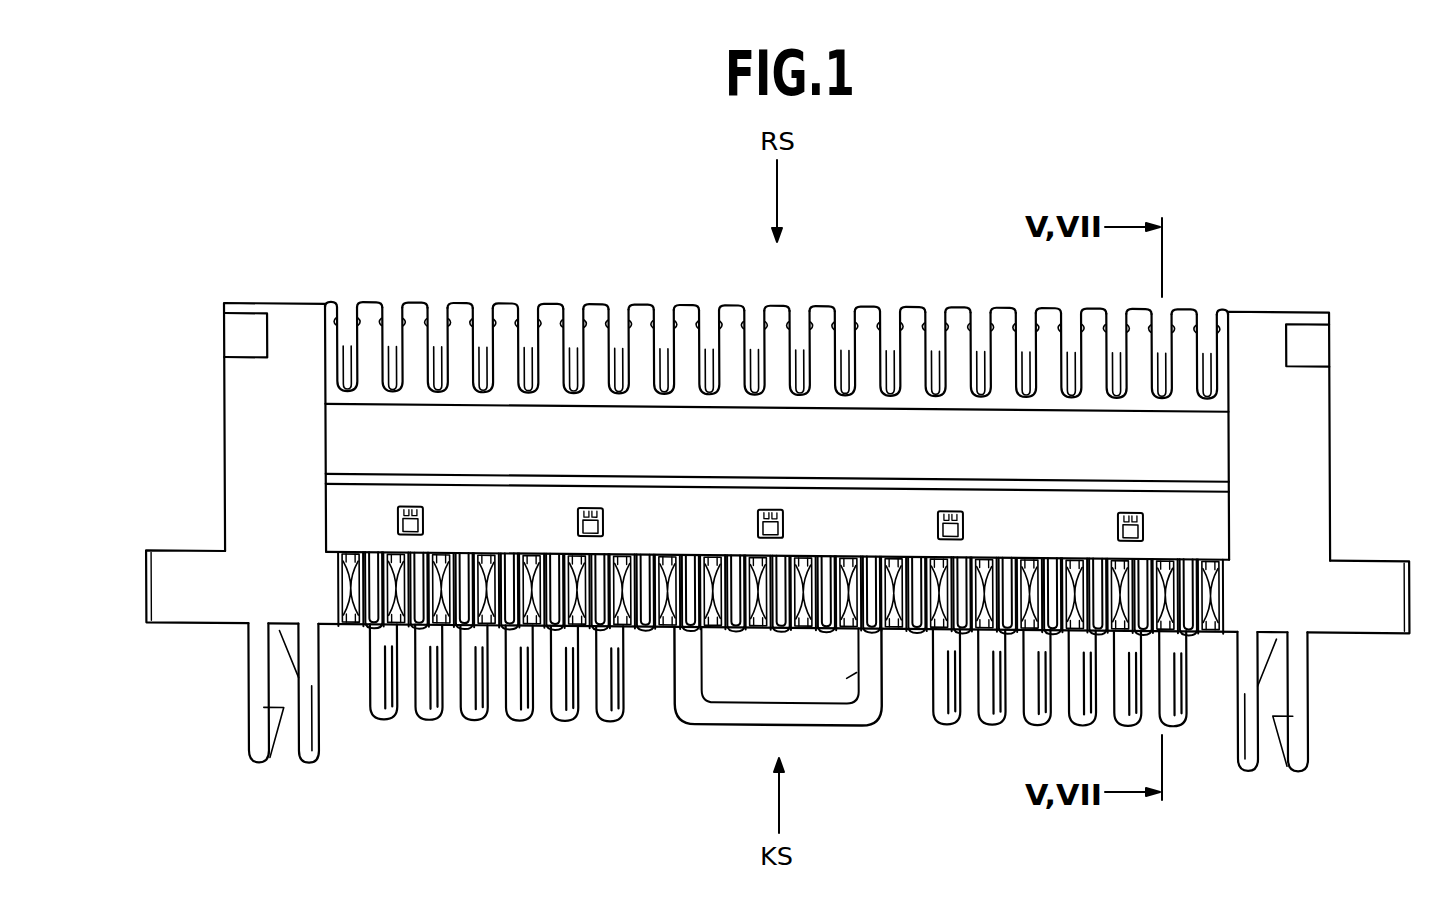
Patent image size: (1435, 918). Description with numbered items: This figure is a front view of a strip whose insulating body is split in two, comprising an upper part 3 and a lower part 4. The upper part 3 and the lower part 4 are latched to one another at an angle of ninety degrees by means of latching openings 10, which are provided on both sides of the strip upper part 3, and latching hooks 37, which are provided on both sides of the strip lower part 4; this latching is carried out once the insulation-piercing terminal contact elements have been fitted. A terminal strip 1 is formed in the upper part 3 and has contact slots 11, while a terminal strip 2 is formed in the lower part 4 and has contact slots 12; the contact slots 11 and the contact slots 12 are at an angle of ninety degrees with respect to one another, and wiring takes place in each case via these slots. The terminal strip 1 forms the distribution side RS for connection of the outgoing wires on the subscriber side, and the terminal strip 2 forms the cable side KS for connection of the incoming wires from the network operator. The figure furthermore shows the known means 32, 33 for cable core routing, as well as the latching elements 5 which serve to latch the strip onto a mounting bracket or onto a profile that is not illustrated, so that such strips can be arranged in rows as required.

The terminal strip 1 is at (391, 289).
The terminal strip 2 is at (417, 748).
The upper part 3 is at (280, 314).
The lower part 4 is at (167, 583).
The latching elements 5 is at (262, 728).
The latching openings 10 is at (770, 524).
The contact slots 11 is at (846, 324).
The contact slots 12 is at (889, 608).
The means for cable core routing 32 is at (612, 723).
The means for cable core routing 33 is at (723, 725).
The latching hooks 37 is at (397, 521).